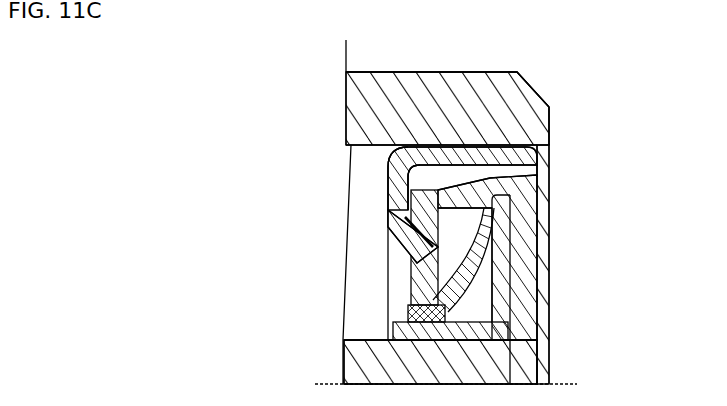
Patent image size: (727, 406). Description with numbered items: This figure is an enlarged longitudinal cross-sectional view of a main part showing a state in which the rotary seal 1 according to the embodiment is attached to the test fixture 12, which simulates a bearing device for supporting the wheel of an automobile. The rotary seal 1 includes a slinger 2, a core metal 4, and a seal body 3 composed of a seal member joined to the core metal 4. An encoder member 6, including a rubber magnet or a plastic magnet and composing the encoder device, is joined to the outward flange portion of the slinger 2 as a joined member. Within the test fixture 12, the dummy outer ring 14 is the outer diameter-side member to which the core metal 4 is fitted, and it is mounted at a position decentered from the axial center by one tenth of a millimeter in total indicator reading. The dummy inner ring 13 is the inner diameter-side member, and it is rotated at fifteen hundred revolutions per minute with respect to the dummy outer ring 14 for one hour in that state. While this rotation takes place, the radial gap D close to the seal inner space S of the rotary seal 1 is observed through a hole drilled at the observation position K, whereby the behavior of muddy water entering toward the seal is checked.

The rotary seal 1 is at (540, 242).
The slinger 2 is at (510, 338).
The seal body 3 is at (310, 308).
The core metal 4 is at (283, 229).
The encoder member 6 is at (530, 285).
The test fixture 12 is at (556, 89).
The dummy inner ring 13 is at (407, 389).
The dummy outer ring 14 is at (537, 118).
The radial gap D is at (537, 174).
The observation position K is at (427, 181).
The seal inner space S is at (310, 262).